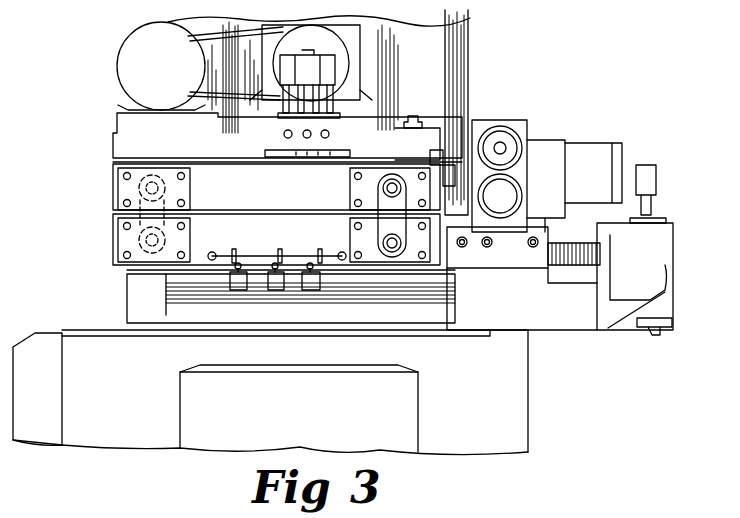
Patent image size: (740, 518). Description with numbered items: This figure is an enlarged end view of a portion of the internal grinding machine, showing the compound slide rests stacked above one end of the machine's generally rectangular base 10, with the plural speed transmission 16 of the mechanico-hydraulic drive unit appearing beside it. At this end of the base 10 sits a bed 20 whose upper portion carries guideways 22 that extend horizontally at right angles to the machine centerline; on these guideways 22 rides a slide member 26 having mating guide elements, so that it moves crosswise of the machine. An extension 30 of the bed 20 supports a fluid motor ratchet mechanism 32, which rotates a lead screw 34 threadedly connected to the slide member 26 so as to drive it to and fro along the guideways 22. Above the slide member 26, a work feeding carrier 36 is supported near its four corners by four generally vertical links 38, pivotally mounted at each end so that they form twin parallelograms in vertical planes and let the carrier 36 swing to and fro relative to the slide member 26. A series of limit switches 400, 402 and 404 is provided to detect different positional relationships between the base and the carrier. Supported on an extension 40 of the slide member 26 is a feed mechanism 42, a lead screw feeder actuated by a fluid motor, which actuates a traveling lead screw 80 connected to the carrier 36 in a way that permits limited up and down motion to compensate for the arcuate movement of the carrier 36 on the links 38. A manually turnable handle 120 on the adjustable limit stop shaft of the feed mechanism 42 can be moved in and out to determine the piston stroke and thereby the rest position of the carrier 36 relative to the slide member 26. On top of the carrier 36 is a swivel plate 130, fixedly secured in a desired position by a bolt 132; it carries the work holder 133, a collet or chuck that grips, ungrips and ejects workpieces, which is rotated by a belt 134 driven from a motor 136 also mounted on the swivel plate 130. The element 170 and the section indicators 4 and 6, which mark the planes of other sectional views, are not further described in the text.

The base 10 is at (92, 330).
The plural speed transmission 16 is at (410, 410).
The bed 20 is at (291, 296).
The guideways 22 is at (205, 265).
The slide member 26 is at (276, 239).
The extension of the bed 30 is at (563, 318).
The fluid motor ratchet mechanism 32 is at (632, 322).
The lead screw 34 is at (582, 264).
The work feeding carrier 36 is at (276, 187).
The vertical links 38 is at (170, 190).
The extension of the slide 40 is at (506, 258).
The feed mechanism 42 is at (580, 128).
The traveling lead screw 80 is at (447, 170).
The manually turnable handle 120 is at (503, 143).
The swivel plate 130 is at (126, 148).
The bolt 132 is at (413, 120).
The work holder 133 is at (338, 57).
The belt 134 is at (150, 42).
The motor 136 is at (150, 58).
The column 170 is at (458, 48).
The limit switch 400 is at (236, 291).
The limit switch 402 is at (277, 291).
The limit switch 404 is at (311, 291).
The section line 4- 4 is at (680, 152).
The section line 6- 6 is at (485, 88).